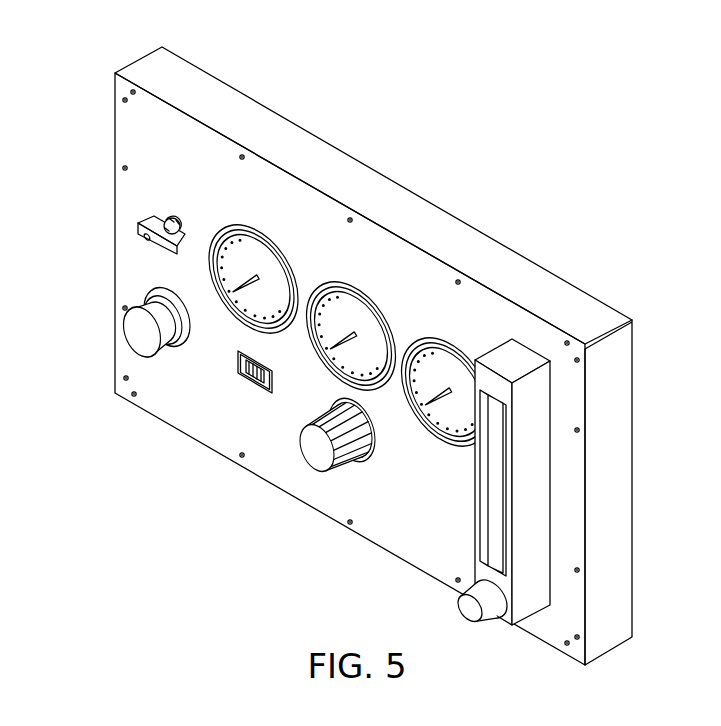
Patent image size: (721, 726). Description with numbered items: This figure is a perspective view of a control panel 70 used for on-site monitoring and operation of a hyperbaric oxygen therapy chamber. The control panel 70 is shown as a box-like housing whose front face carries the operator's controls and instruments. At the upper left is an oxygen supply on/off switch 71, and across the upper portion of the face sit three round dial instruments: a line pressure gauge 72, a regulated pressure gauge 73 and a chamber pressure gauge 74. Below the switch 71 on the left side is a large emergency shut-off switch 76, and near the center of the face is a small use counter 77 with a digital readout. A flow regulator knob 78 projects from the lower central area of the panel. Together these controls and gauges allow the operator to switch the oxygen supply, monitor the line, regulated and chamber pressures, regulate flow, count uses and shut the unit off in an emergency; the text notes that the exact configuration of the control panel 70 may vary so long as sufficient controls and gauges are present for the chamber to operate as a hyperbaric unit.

The control panel 70 is at (500, 120).
The oxygen supply on/off switch 71 is at (137, 225).
The line pressure gauge 72 is at (238, 227).
The regulated pressure gauge 73 is at (335, 282).
The chamber pressure gauge 74 is at (432, 340).
The emergency shut-off switch 76 is at (135, 323).
The use counter 77 is at (252, 393).
The flow regulator knob 78 is at (315, 458).